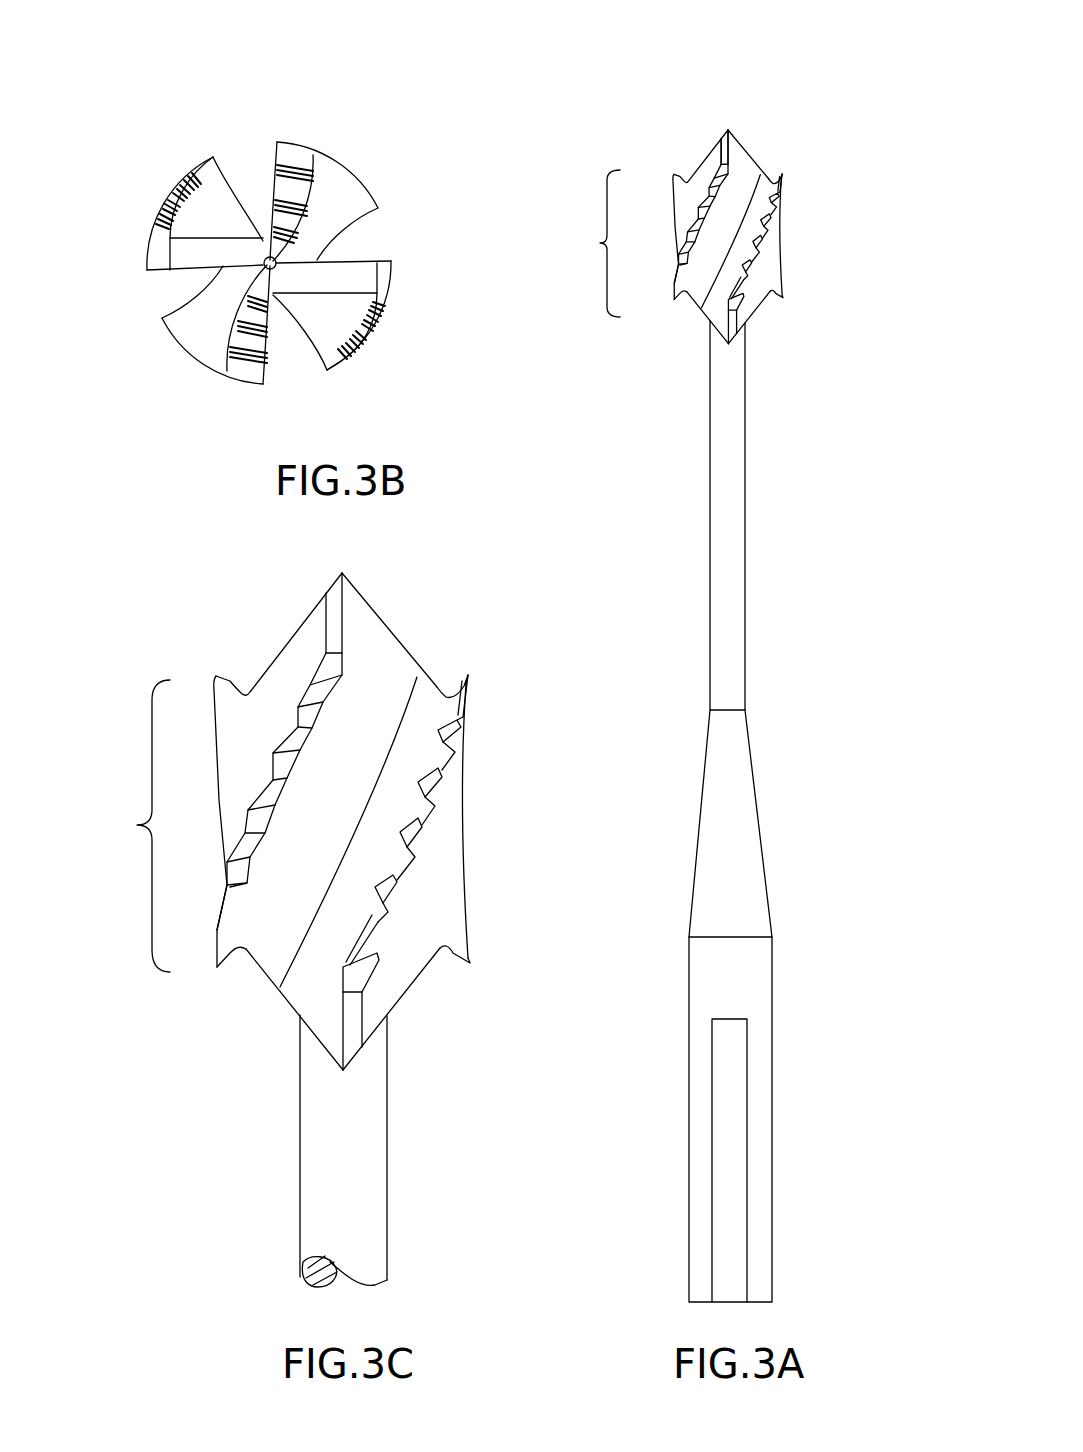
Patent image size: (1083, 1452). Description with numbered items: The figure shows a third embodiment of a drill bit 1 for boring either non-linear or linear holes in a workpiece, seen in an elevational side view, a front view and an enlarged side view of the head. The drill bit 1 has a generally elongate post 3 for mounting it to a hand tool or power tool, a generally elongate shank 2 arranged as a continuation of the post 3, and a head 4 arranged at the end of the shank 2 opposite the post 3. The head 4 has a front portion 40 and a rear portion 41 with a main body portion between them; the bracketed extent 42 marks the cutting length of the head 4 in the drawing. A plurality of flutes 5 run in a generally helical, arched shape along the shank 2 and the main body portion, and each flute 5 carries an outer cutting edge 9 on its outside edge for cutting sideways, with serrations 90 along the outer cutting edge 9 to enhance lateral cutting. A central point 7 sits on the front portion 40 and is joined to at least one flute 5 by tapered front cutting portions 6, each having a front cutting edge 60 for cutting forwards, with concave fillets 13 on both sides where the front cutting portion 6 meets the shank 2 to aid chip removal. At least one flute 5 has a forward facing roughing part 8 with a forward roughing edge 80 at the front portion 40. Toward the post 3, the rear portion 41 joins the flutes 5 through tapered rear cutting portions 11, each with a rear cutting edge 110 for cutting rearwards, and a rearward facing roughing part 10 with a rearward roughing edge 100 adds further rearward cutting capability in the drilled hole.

In FIG. 3A, the drill bit 1 is at (780, 535).
In FIG. 3C, the shank 2 is at (367, 1173).
In FIG. 3A, the shank 2 is at (724, 480).
In FIG. 3A, the post 3 is at (735, 976).
In FIG. 3C, the head 4 is at (502, 822).
In FIG. 3A, the head 4 is at (797, 260).
In FIG. 3B, the head 4 is at (253, 288).
In FIG. 3C, the flutes 5 is at (397, 765).
In FIG. 3A, the flutes 5 is at (742, 242).
In FIG. 3B, the flutes 5 is at (244, 232).
In FIG. 3B, the front cutting portions 6 is at (323, 248).
In FIG. 3C, the central point 7 is at (342, 573).
In FIG. 3A, the central point 7 is at (728, 130).
In FIG. 3B, the central point 7 is at (260, 186).
In FIG. 3C, the forward facing roughing part 8 is at (467, 676).
In FIG. 3A, the forward facing roughing part 8 is at (673, 177).
In FIG. 3B, the forward facing roughing part 8 is at (163, 263).
In FIG. 3C, the outer cutting edge 9 is at (377, 920).
In FIG. 3B, the outer cutting edge 9 is at (278, 241).
In FIG. 3C, the rearward facing roughing part 10 is at (468, 957).
In FIG. 3A, the rearward facing roughing part 10 is at (780, 297).
In FIG. 3C, the rear cutting portions 11 is at (382, 989).
In FIG. 3C, the concave fillets 13 is at (363, 633).
In FIG. 3A, the concave fillets 13 is at (745, 167).
In FIG. 3A, the front portion 40 is at (723, 108).
In FIG. 3C, the rear portion 41 is at (295, 1015).
In FIG. 3A, the rear portion 41 is at (687, 297).
In FIG. 3C, the cutting length 42 is at (127, 826).
In FIG. 3A, the cutting length 42 is at (583, 243).
In FIG. 3B, the front cutting edge 60 is at (406, 223).
In FIG. 3C, the forward roughing edge 80 is at (244, 690).
In FIG. 3B, the forward roughing edge 80 is at (226, 303).
In FIG. 3C, the serrations 90 is at (397, 885).
In FIG. 3A, the serrations 90 is at (747, 272).
In FIG. 3B, the serrations 90 is at (325, 246).
In FIG. 3C, the rearward roughing edge 100 is at (283, 1017).
In FIG. 3A, the rearward roughing edge 100 is at (708, 324).
In FIG. 3C, the rear cutting edge 110 is at (353, 1027).